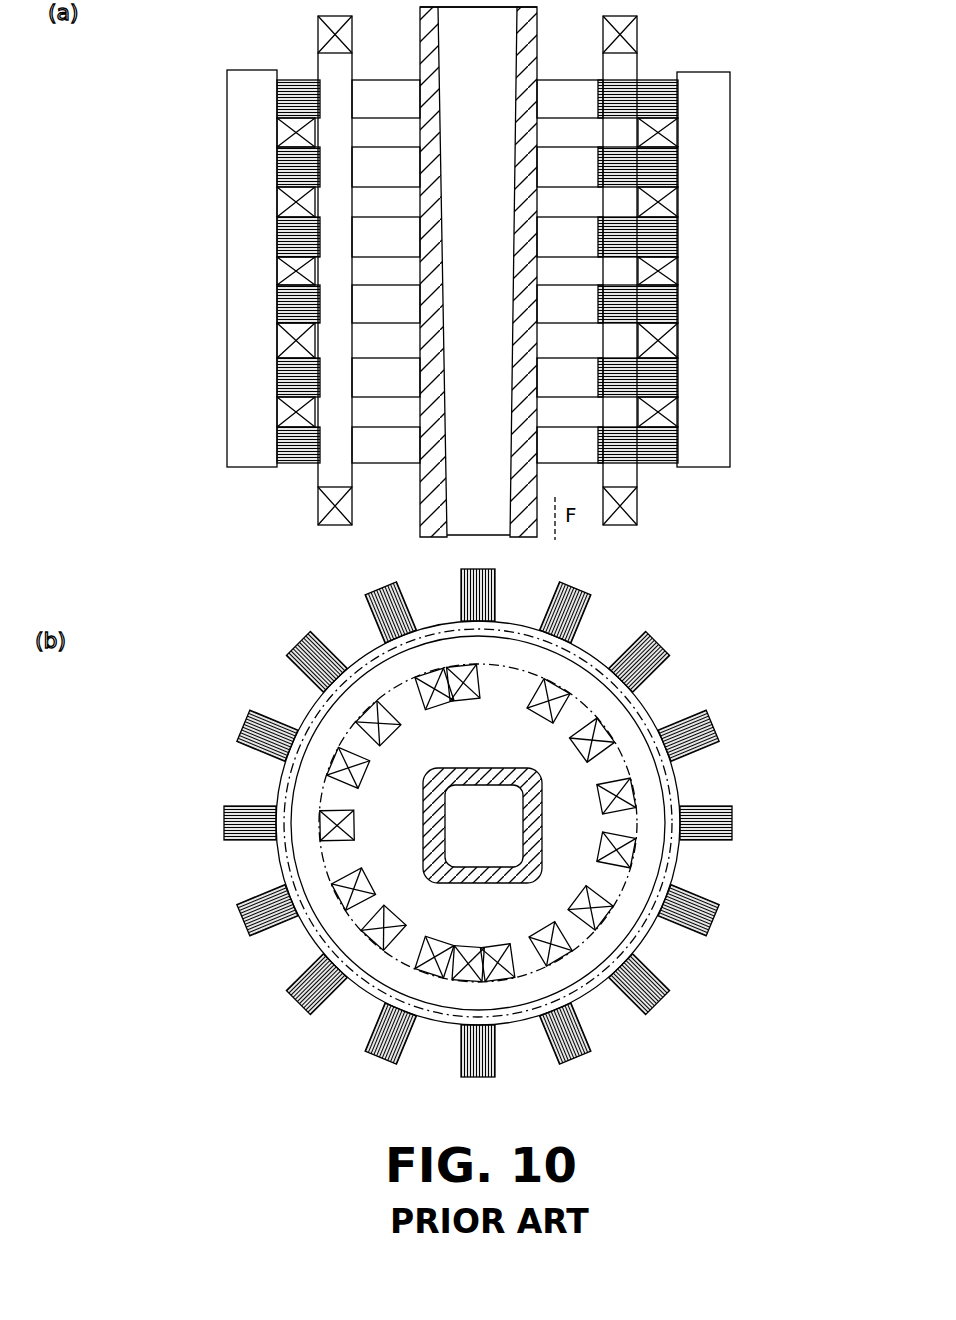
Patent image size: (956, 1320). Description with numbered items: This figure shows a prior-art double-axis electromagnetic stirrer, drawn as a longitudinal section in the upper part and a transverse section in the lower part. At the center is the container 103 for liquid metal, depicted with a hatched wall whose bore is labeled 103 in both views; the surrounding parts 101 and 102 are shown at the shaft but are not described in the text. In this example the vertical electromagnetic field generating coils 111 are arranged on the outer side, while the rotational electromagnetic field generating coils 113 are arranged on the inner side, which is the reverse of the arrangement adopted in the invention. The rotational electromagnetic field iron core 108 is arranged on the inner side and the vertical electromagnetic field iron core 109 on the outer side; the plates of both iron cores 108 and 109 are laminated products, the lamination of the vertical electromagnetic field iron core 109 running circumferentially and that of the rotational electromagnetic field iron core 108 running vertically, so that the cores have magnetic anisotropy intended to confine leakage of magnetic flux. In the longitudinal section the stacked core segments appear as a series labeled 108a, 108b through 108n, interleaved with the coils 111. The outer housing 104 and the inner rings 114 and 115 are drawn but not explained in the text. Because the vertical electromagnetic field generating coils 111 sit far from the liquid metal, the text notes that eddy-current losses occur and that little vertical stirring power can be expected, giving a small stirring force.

The rotor 101 is at (548, 30).
The shaft sleeve 102 is at (420, 14).
The container 103 is at (480, 437).
The stator housing 104 is at (737, 80).
The rotational electromagnetic field iron core 108 is at (690, 790).
The permanent magnet 108a is at (277, 100).
The permanent magnet 108b is at (277, 183).
The permanent magnet 108n is at (277, 448).
The vertical electromagnetic field iron core 109 is at (242, 160).
The vertical electromagnetic field generating coil 111 is at (312, 195).
The rotational electromagnetic field generating coil 113 is at (350, 36).
The inner ring 114 is at (590, 958).
The rotor ring 115 is at (555, 695).